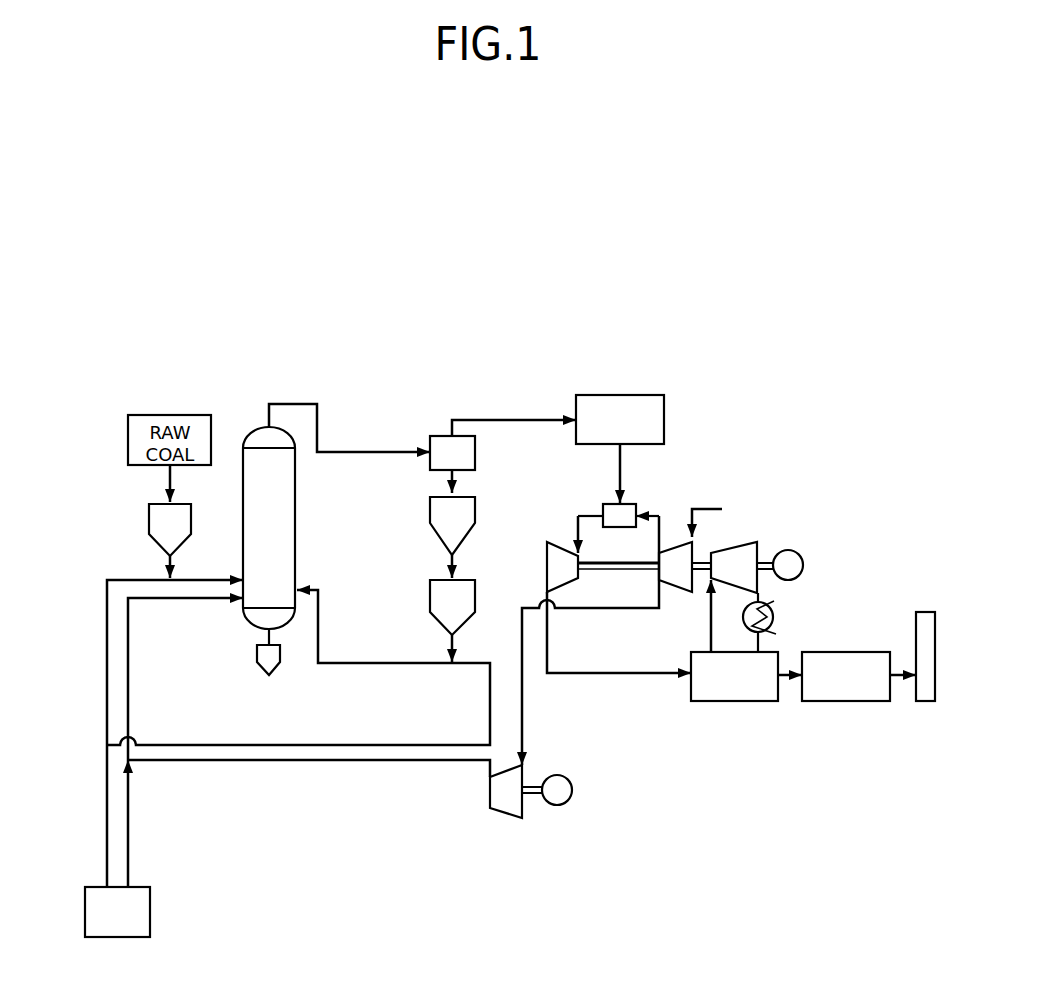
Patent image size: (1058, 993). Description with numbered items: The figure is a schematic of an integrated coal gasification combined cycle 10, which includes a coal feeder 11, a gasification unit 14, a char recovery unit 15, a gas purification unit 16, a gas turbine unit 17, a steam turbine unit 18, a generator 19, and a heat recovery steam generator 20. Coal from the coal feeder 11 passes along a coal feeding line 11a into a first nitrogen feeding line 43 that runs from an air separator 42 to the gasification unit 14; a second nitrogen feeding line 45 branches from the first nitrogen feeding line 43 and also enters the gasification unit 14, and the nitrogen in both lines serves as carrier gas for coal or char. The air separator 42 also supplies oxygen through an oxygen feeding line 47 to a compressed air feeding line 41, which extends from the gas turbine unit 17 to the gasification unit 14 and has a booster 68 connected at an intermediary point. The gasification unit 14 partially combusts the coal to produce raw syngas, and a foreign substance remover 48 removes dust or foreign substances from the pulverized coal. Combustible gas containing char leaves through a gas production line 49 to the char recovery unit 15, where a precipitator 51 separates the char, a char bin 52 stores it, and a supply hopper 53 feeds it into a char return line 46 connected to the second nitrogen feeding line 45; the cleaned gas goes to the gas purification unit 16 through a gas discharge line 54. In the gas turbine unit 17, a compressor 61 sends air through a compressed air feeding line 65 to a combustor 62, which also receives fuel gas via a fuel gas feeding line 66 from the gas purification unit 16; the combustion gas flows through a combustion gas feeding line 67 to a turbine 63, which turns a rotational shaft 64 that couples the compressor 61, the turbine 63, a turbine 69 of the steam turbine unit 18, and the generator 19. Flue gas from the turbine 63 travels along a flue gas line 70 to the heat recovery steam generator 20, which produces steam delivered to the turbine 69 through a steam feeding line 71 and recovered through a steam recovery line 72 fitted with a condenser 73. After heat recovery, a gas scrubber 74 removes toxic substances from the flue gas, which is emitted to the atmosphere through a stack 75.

The integrated coal gasification combined cycle 10 is at (426, 240).
The coal feeder 11 is at (147, 524).
The coal feeding line 11a is at (168, 561).
The gasification unit 14 is at (240, 433).
The char recovery unit 15 is at (441, 434).
The gas purification unit 16 is at (638, 394).
The gas turbine unit 17 is at (609, 524).
The steam turbine unit 18 is at (738, 524).
The generator 19 is at (801, 550).
The heat recovery steam generator 20 is at (762, 703).
The compressed air feeding line 41 is at (323, 762).
The air separator 42 is at (85, 900).
The first nitrogen feeding line 43 is at (107, 795).
The second nitrogen feeding line 45 is at (163, 742).
The char return line 46 is at (458, 640).
The oxygen feeding line 47 is at (130, 795).
The foreign substance remover 48 is at (257, 675).
The gas production line 49 is at (297, 404).
The precipitator 51 is at (428, 442).
The char bin 52 is at (430, 500).
The supply hopper 53 is at (430, 585).
The gas discharge line 54 is at (506, 420).
The compressor 61 is at (675, 588).
The combustor 62 is at (637, 510).
The turbine 63 is at (547, 548).
The rotational shaft 64 is at (613, 572).
The compressed air feeding line 65 is at (660, 527).
The fuel gas feeding line 66 is at (620, 458).
The combustion gas feeding line 67 is at (590, 515).
The booster 68 is at (502, 810).
The turbine 69 is at (750, 526).
The flue gas line 70 is at (617, 676).
The steam feeding line 71 is at (710, 637).
The steam recovery line 72 is at (762, 640).
The condenser 73 is at (777, 608).
The gas scrubber 74 is at (858, 651).
The stack 75 is at (918, 610).